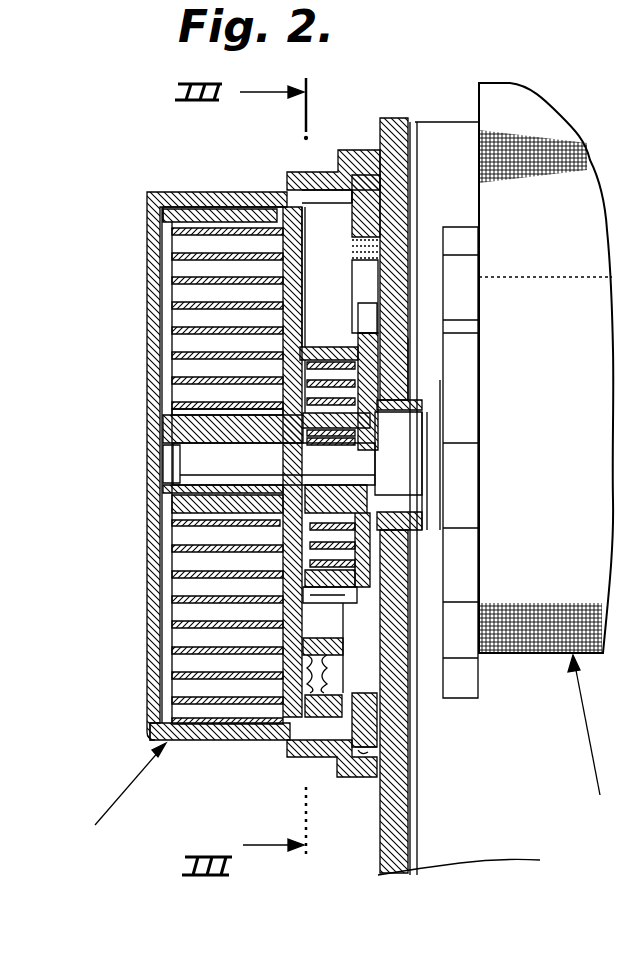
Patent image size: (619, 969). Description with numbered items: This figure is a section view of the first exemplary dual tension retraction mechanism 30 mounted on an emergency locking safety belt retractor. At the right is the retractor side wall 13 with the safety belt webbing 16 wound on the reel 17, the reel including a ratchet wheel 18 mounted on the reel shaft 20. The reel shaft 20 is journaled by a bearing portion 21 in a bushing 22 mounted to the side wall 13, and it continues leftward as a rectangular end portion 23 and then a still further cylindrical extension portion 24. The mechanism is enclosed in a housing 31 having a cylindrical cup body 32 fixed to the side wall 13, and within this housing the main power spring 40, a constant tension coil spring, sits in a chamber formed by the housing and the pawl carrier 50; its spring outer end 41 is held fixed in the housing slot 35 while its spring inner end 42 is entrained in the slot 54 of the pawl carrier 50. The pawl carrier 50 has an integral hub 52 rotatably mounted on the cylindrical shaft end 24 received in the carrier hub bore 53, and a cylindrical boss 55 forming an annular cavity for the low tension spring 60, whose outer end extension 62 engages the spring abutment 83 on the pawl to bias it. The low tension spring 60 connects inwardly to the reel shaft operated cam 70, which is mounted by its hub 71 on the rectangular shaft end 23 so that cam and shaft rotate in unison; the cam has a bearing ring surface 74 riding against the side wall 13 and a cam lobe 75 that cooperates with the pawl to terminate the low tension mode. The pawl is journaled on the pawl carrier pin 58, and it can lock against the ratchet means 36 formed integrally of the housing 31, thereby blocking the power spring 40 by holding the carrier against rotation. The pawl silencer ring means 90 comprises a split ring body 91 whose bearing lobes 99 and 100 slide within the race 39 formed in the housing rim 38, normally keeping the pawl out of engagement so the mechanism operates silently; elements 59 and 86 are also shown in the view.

The retractor side wall 13 is at (397, 135).
The safety belt webbing 16 is at (533, 118).
The safety belt reel 17 is at (590, 736).
The ratchet wheel 18 is at (470, 688).
The reel shaft 20 is at (438, 490).
The bearing portion 21 is at (397, 427).
The bushing 22 is at (445, 527).
The rectangular end portion 23 is at (345, 468).
The extension portion 24 is at (202, 460).
The retraction mechanism 30 is at (115, 795).
The housing 31 is at (143, 737).
The cylindrical cup body 32 is at (208, 736).
The housing slot 35 is at (205, 215).
The ratchet means 36 is at (307, 757).
The rim 38 is at (352, 158).
The race 39 is at (357, 775).
The main power spring 40 is at (187, 268).
The spring outer end 41 is at (170, 207).
The spring inner end 42 is at (163, 497).
The pawl carrier 50 is at (275, 198).
The hub 52 is at (227, 425).
The carrier hub bore 53 is at (202, 445).
The slot 54 is at (192, 510).
The cylindrical boss 55 is at (330, 347).
The pawl carrier pin 58 is at (303, 687).
The snap ring 59 is at (277, 610).
The low tension spring 60 is at (377, 390).
The extension of spring outer end 62 is at (365, 585).
The reel shaft operated cam 70 is at (355, 325).
The hub 71 is at (257, 530).
The bearing ring surface 74 is at (412, 348).
The cam lobe 75 is at (375, 312).
The spring abutment 83 is at (330, 623).
The retainer 86 is at (285, 750).
The pawl silencer ring means 90 is at (365, 725).
The split ring body 91 is at (365, 198).
The bearing lobe 99 is at (377, 170).
The bearing lobe 100 is at (368, 752).